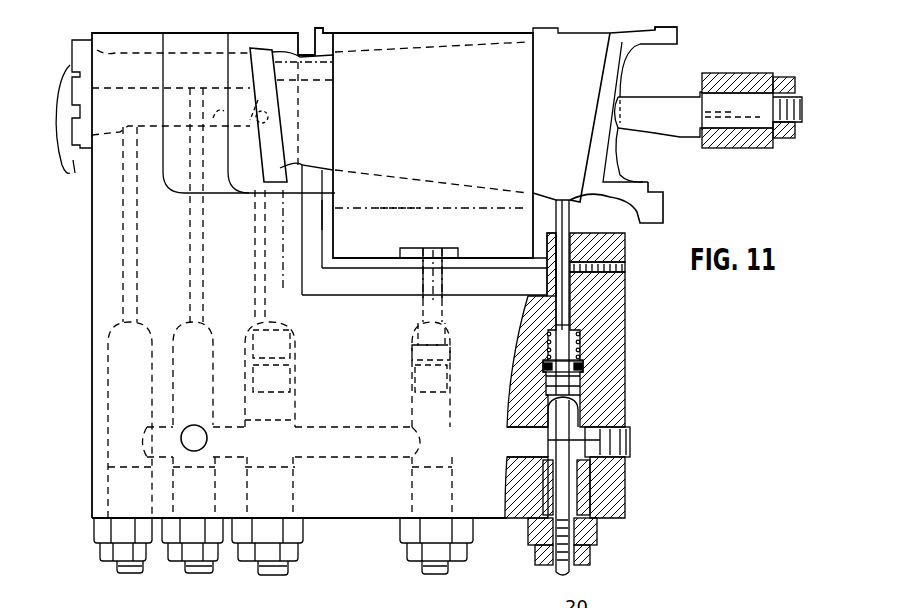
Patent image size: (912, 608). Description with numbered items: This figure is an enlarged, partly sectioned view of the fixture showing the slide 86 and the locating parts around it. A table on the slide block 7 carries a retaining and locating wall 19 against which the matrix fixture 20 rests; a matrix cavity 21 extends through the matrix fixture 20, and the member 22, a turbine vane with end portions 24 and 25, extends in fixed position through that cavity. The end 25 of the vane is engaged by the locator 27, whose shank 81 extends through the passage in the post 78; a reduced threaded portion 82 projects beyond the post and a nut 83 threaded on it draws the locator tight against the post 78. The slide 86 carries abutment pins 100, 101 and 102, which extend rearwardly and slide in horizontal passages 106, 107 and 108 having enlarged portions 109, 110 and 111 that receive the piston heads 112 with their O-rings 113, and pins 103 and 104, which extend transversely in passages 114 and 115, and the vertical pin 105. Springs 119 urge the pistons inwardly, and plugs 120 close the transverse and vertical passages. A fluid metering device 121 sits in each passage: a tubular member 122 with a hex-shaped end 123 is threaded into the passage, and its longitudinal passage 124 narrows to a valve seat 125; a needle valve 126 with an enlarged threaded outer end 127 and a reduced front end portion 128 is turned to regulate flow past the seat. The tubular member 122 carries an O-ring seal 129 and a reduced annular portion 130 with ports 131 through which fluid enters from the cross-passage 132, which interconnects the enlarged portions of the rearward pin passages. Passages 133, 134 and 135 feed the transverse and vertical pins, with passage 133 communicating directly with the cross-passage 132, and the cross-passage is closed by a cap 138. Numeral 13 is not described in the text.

The slide block 7 is at (325, 222).
The valve body assembly 13 is at (291, 601).
The retaining and locating wall 19 is at (549, 37).
The matrix fixture 20 is at (437, 125).
The matrix cavity 21 is at (402, 208).
The member 22 is at (668, 182).
The end portion 24 is at (286, 150).
The end portion 25 is at (672, 36).
The locator 27 is at (655, 102).
The post 78 is at (758, 74).
The shank 81 is at (733, 74).
The reduced threaded portion 82 is at (795, 107).
The nut 83 is at (793, 78).
The slide 86 is at (90, 288).
The abutment pin 100 is at (572, 298).
The abutment pin 101 is at (444, 285).
The abutment pin 102 is at (278, 287).
The abutment pin 103 is at (248, 100).
The abutment pin 104 is at (340, 72).
The abutment pin 105 is at (283, 115).
The passage 106 is at (575, 320).
The passage 107 is at (446, 318).
The passage 108 is at (290, 322).
The enlarged portion 109 is at (580, 352).
The enlarged portion 110 is at (452, 352).
The enlarged portion 111 is at (292, 420).
The piston head 112 is at (583, 382).
The O-ring 113 is at (583, 368).
The passage 114 is at (213, 205).
The passage 115 is at (304, 115).
The spring 119 is at (547, 347).
The plug 120 is at (75, 120).
The fluid metering device 121 is at (91, 546).
The tubular member 122 is at (592, 488).
The hex-shaped end 123 is at (598, 522).
The longitudinal passage 124 is at (592, 472).
The valve seat 125 is at (580, 405).
The needle valve 126 is at (566, 498).
The enlarged threaded outer end 127 is at (592, 545).
The reduced front end portion 128 is at (585, 418).
The O-ring seal 129 is at (515, 426).
The reduced annular portion 130 is at (510, 447).
The port 131 is at (598, 440).
The cross-passage 132 is at (372, 462).
The passage 133 is at (105, 393).
The passage 134 is at (183, 412).
The passage 135 is at (255, 262).
The cap 138 is at (193, 431).